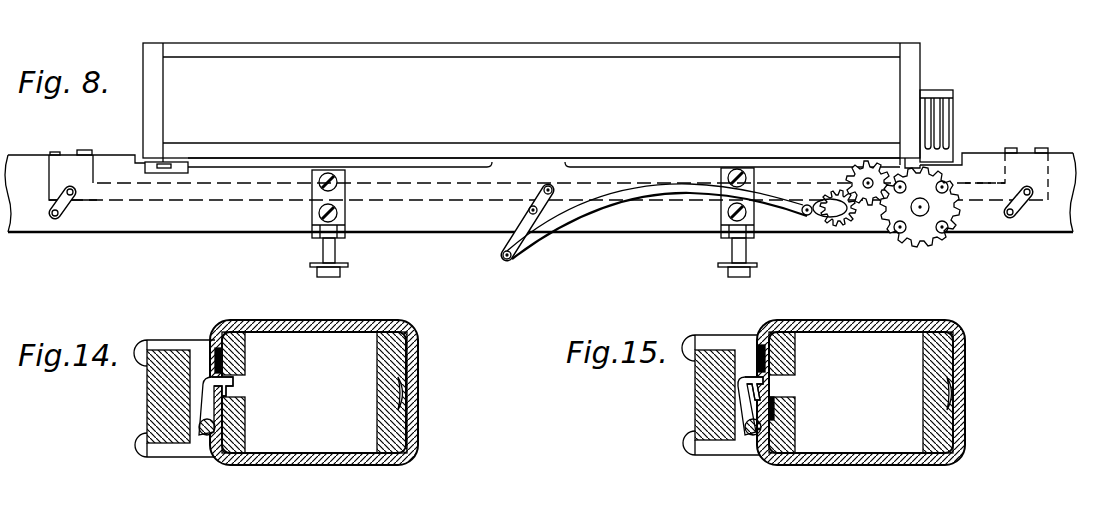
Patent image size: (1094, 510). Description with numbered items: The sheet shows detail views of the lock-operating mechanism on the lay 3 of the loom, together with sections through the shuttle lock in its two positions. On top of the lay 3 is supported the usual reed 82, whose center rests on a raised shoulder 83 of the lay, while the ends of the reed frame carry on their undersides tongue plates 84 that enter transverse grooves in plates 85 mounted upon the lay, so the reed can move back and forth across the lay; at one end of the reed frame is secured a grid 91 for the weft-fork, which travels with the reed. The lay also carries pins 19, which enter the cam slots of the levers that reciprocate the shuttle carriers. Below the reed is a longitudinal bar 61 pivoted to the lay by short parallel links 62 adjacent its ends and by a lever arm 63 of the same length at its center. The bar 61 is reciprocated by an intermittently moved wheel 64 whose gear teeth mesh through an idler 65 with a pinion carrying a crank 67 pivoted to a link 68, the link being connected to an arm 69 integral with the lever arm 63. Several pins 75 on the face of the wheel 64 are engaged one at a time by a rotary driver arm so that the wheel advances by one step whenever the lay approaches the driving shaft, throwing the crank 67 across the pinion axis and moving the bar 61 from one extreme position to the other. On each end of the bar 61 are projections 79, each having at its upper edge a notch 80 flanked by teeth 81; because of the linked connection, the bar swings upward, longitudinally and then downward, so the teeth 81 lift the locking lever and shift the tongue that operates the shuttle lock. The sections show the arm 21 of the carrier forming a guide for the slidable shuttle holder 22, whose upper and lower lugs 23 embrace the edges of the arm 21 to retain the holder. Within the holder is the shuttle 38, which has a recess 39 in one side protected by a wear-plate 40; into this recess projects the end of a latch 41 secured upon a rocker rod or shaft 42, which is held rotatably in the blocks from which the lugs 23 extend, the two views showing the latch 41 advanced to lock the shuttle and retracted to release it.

In FIG. 8, the lay 3 is at (447, 217).
In FIG. 8, the pin or roll 19 is at (330, 245).
In FIG. 14, the arm 21 is at (167, 397).
In FIG. 15, the arm 21 is at (697, 378).
In FIG. 14, the shuttle holder 22 is at (418, 397).
In FIG. 15, the shuttle holder 22 is at (962, 432).
In FIG. 14, the lugs 23 is at (148, 339).
In FIG. 15, the lugs 23 is at (693, 336).
In FIG. 14, the shuttle 38 is at (383, 362).
In FIG. 15, the shuttle 38 is at (927, 362).
In FIG. 14, the recess 39 is at (240, 385).
In FIG. 15, the recess 39 is at (783, 387).
In FIG. 14, the wear-plate 40 is at (247, 425).
In FIG. 15, the wear-plate 40 is at (777, 413).
In FIG. 14, the latch 41 is at (213, 390).
In FIG. 15, the latch 41 is at (740, 390).
In FIG. 14, the rocker rod or shaft 42 is at (202, 437).
In FIG. 15, the rocker rod or shaft 42 is at (750, 437).
In FIG. 8, the longitudinal bar 61 is at (270, 185).
In FIG. 8, the short parallel links 62 is at (67, 208).
In FIG. 8, the lever arm 63 is at (528, 195).
In FIG. 8, the intermittently moved wheel 64 is at (905, 238).
In FIG. 8, the idler 65 is at (853, 180).
In FIG. 8, the crank 67 is at (815, 222).
In FIG. 8, the link 68 is at (668, 190).
In FIG. 8, the arm 69 is at (513, 235).
In FIG. 8, the pins 75 is at (943, 233).
In FIG. 8, the projections 79 is at (97, 167).
In FIG. 8, the notch 80 is at (69, 149).
In FIG. 8, the teeth 81 is at (50, 151).
In FIG. 8, the reed 82 is at (598, 48).
In FIG. 8, the raised shoulder 83 is at (545, 168).
In FIG. 8, the tongue plates 84 is at (177, 162).
In FIG. 8, the plates 85 is at (145, 163).
In FIG. 8, the grid 91 is at (940, 92).